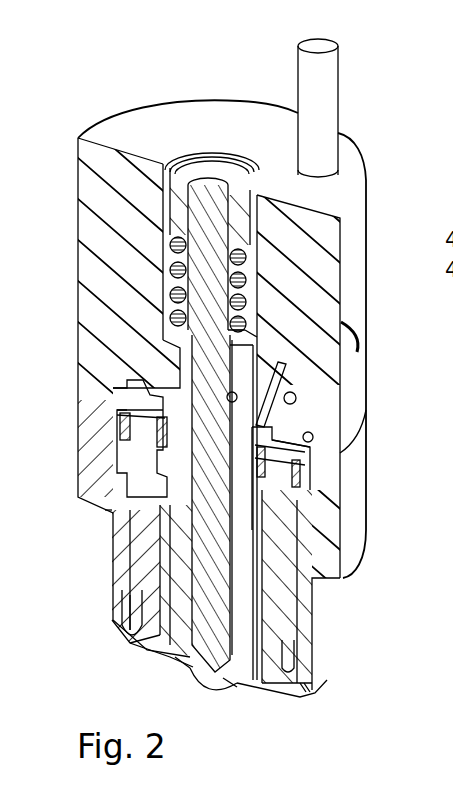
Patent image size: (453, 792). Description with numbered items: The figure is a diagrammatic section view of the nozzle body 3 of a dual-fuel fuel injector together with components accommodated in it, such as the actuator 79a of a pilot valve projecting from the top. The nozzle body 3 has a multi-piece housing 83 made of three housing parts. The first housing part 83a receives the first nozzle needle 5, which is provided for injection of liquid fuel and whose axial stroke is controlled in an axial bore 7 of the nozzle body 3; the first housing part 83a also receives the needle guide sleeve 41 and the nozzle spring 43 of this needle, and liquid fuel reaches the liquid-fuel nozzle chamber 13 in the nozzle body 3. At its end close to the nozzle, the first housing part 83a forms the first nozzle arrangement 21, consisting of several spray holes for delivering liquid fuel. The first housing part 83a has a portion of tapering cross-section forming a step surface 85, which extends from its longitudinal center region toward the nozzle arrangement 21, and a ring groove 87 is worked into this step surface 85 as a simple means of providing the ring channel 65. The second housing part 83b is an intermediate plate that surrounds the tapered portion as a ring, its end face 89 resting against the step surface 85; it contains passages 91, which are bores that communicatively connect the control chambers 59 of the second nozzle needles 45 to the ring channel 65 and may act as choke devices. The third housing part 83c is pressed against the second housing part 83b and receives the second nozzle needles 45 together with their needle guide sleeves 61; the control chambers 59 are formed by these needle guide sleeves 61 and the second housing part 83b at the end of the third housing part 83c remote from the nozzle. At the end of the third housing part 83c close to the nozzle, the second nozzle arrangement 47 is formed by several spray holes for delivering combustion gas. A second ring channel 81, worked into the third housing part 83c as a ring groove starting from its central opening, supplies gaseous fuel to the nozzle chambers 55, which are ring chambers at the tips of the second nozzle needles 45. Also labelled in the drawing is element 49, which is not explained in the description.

The nozzle body 3 is at (78, 133).
The first nozzle needle 5 is at (206, 197).
The axial bore 7 is at (192, 410).
The liquid-fuel nozzle chamber 13 is at (197, 635).
The first nozzle arrangement 21 is at (232, 680).
The needle guide sleeve 41 is at (178, 200).
The nozzle spring 43 is at (175, 272).
The second nozzle needles 45 is at (147, 545).
The second nozzle arrangement 47 is at (308, 688).
The nozzle body 49 is at (128, 570).
The nozzle chambers 55 is at (130, 603).
The control chambers 59 is at (160, 418).
The needle guide sleeves 61 is at (125, 428).
The ring channel 65 is at (143, 398).
The actuator 79a is at (308, 75).
The second ring channel 81 is at (163, 617).
The housing 83 is at (70, 222).
The first housing part 83a is at (347, 245).
The second housing part 83b is at (362, 443).
The third housing part 83c is at (347, 530).
The step surface 85 is at (275, 395).
The ring groove 87 is at (291, 443).
The end face 89 is at (300, 350).
The passages 91 is at (130, 405).